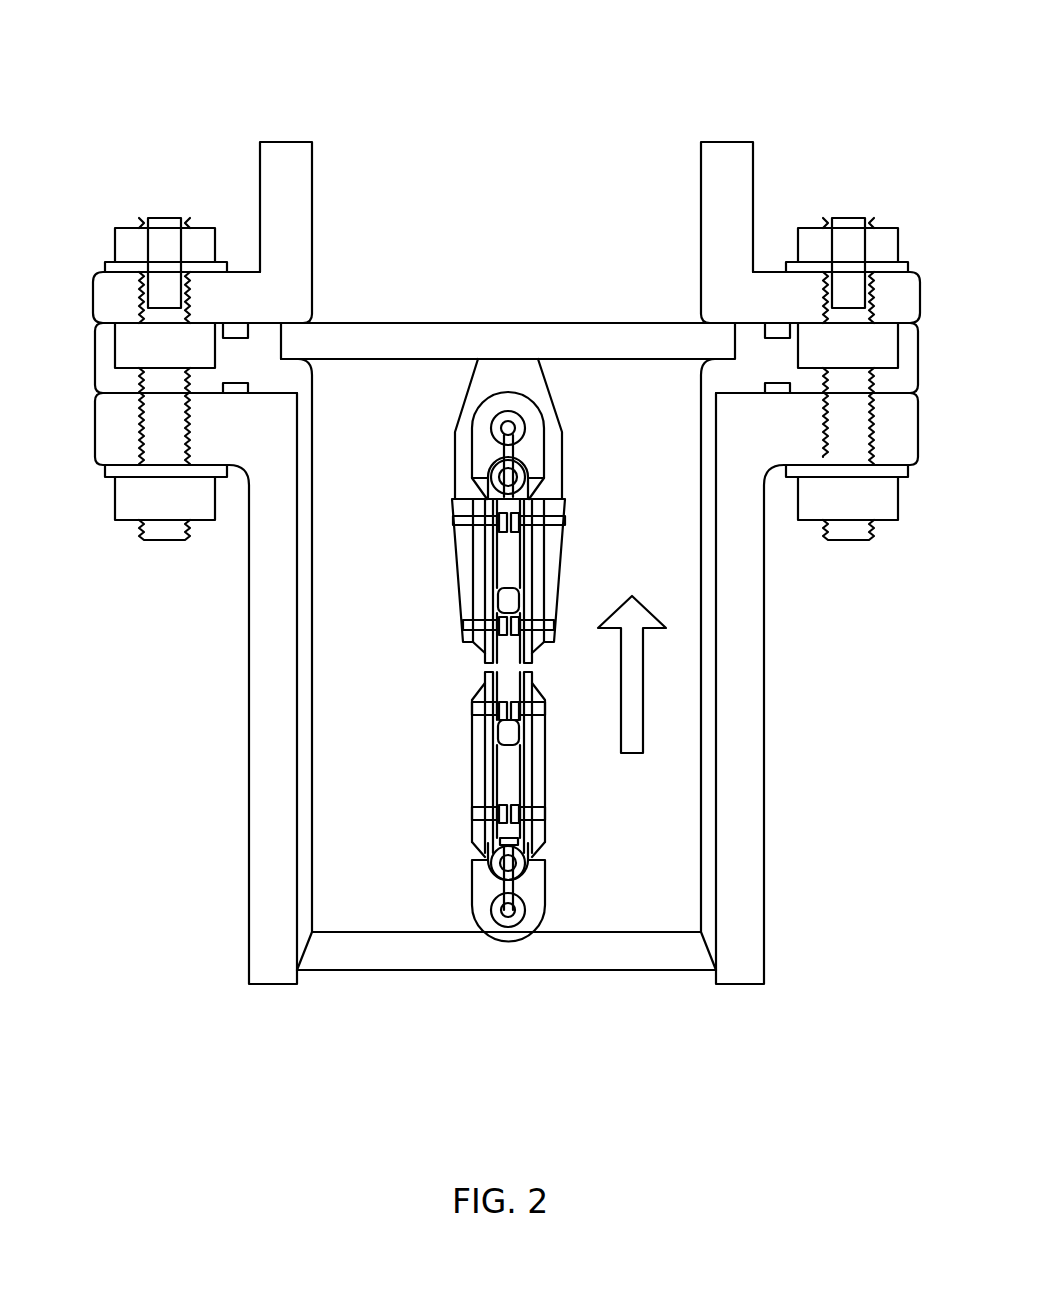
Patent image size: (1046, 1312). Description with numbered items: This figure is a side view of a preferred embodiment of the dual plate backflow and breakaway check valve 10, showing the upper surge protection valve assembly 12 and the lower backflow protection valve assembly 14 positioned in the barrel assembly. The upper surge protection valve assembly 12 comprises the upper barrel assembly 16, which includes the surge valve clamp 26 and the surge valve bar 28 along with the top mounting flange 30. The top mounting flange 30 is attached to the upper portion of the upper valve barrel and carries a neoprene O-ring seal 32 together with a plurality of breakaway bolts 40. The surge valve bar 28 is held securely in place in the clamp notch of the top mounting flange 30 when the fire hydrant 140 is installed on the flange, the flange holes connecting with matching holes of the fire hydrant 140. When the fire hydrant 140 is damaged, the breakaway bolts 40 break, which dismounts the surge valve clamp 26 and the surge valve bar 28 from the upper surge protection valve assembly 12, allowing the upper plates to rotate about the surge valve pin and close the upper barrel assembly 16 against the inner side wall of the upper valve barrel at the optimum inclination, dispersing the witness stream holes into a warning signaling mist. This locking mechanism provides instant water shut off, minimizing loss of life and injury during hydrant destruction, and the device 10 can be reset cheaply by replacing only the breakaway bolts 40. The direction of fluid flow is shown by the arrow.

The dual plate backflow and breakaway check valve 10 is at (511, 80).
The upper surge protection valve assembly 12 is at (412, 550).
The lower backflow protection valve assembly 14 is at (590, 792).
The upper barrel assembly 16 is at (314, 722).
The surge valve clamp 26 is at (452, 432).
The surge valve bar 28 is at (408, 325).
The top mounting flange 30 is at (93, 375).
The neoprene O-ring seal 32 is at (778, 330).
The breakaway bolts 40 is at (160, 217).
The fire hydrant 140 is at (725, 140).